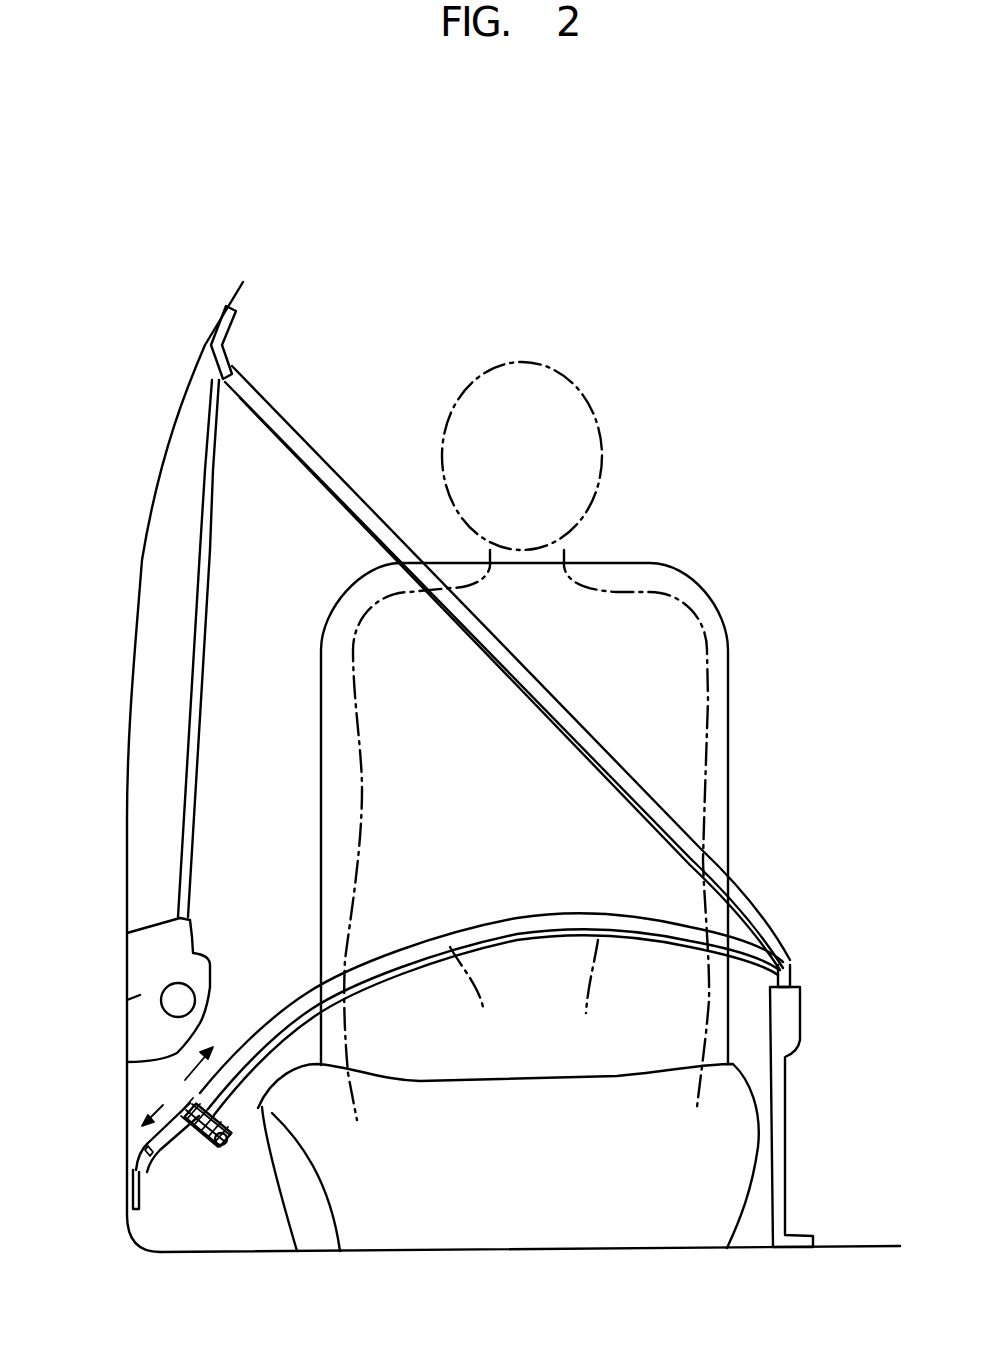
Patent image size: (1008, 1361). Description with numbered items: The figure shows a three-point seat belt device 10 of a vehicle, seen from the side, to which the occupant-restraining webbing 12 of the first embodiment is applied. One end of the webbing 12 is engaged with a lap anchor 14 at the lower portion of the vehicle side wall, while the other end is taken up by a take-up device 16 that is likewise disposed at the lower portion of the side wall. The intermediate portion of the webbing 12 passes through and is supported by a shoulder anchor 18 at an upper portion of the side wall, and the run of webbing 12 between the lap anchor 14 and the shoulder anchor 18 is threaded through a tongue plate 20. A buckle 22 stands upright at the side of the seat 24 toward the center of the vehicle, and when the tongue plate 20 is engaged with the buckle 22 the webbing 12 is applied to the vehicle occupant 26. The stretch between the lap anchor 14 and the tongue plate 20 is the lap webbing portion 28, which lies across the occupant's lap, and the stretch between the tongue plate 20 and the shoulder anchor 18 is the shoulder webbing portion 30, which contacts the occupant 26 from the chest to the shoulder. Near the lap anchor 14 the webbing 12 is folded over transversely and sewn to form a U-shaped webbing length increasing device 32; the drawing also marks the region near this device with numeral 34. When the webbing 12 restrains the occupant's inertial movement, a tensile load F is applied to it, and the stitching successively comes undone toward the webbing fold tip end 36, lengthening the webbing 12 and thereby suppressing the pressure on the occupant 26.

The three-point seat belt device 10 is at (347, 398).
The webbing 12 is at (333, 481).
The lap anchor 14 is at (133, 1188).
The take-up device 16 is at (127, 1002).
The shoulder anchor 18 is at (222, 323).
The tongue plate 20 is at (787, 971).
The buckle 22 is at (792, 1018).
The seat 24 is at (675, 1222).
The vehicle occupant 26 is at (705, 773).
The lap webbing portion 28 is at (477, 932).
The shoulder webbing portion 30 is at (532, 681).
The webbing length increasing device 32 is at (190, 1150).
The seat cushion 34 is at (340, 1251).
The webbing fold tip end 36 is at (227, 1145).
The tensile load F is at (163, 1105).